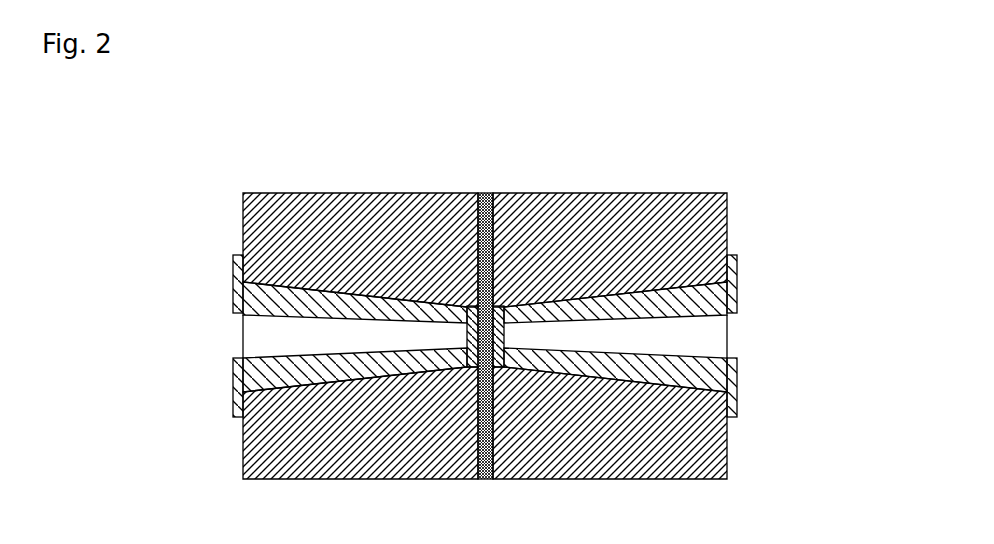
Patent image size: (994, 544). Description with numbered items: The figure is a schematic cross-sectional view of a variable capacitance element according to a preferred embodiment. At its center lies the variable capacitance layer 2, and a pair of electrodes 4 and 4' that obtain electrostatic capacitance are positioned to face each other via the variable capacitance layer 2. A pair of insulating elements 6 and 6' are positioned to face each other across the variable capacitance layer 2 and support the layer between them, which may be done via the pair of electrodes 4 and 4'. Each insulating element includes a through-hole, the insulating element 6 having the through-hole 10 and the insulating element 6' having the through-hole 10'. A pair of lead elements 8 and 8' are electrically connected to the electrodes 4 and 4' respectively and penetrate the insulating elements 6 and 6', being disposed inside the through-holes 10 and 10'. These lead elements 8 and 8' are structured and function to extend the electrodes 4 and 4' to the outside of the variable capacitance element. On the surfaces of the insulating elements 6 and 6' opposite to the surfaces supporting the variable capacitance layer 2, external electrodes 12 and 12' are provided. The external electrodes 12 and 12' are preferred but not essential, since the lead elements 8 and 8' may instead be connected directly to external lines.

The variable capacitance layer 2 is at (486, 198).
The electrode 4 is at (466, 416).
The electrode 4' is at (510, 416).
The insulating element 6 is at (360, 228).
The insulating element 6' is at (610, 228).
The lead element 8 is at (360, 446).
The lead element 8' is at (610, 446).
The through-hole 10 is at (213, 338).
The through-hole 10' is at (761, 336).
The external electrode 12 is at (312, 289).
The external electrode 12' is at (663, 382).